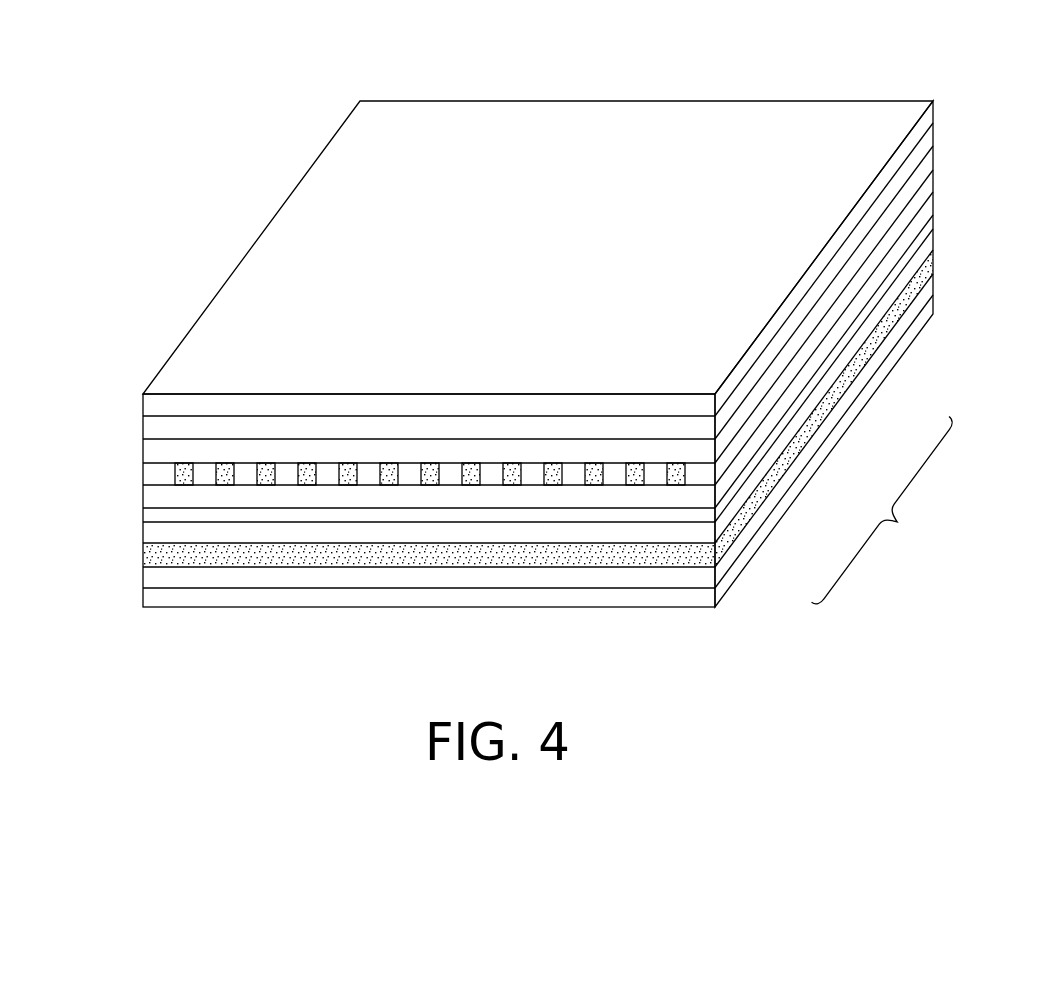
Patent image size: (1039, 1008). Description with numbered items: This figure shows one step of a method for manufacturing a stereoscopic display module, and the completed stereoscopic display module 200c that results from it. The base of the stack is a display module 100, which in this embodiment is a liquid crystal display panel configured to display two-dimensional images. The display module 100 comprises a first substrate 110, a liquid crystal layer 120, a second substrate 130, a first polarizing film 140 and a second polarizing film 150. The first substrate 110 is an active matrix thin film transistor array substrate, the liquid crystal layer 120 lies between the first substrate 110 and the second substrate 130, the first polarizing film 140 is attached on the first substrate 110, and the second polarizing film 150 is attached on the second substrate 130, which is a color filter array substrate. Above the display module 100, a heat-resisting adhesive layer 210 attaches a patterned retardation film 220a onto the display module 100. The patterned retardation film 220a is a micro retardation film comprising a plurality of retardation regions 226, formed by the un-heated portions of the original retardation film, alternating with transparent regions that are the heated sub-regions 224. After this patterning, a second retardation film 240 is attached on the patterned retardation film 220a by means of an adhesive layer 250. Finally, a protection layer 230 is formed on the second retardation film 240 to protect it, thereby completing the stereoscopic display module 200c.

The display module 100 is at (889, 516).
The first substrate 110 is at (753, 520).
The liquid crystal layer 120 is at (765, 482).
The second substrate 130 is at (778, 443).
The first polarizing film 140 is at (745, 553).
The second polarizing film 150 is at (798, 402).
The stereoscopic display module 200c is at (1008, 697).
The heat-resisting adhesive layer 210 is at (848, 315).
The patterned retardation film 220a is at (541, 332).
The heated sub-regions 224 is at (225, 472).
The retardation regions 226 is at (245, 472).
The protection layer 230 is at (927, 118).
The second retardation film 240 is at (927, 145).
The adhesive layer 250 is at (927, 168).